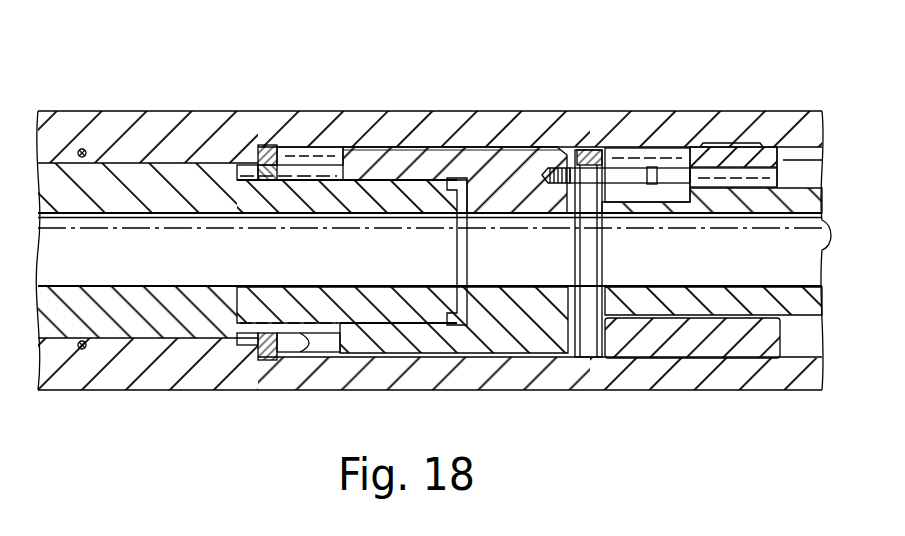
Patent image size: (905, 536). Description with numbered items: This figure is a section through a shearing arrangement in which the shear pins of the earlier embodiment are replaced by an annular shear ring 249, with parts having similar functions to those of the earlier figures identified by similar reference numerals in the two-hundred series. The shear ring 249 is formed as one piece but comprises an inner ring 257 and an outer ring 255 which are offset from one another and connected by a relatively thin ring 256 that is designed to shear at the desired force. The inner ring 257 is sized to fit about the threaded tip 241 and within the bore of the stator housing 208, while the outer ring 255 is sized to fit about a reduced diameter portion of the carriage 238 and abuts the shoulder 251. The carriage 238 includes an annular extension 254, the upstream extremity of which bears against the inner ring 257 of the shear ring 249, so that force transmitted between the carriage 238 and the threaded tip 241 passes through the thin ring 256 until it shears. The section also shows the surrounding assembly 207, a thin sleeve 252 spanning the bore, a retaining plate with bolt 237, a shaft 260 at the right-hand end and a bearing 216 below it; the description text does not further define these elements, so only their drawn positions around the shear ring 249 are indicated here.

The seal assembly 207 is at (386, 106).
The stator housing 208 is at (540, 128).
The bearing 216 is at (673, 335).
The retaining plate with bolt 237 is at (616, 172).
The carriage 238 is at (432, 162).
The threaded tip 241 is at (414, 302).
The shear ring 249 is at (274, 132).
The shoulder 251 is at (256, 342).
The thin sleeve 252 is at (473, 302).
The annular extension 254 is at (268, 358).
The outer ring 255 is at (296, 152).
The relatively thin ring 256 is at (262, 165).
The inner ring 257 is at (232, 165).
The shaft 260 is at (793, 202).